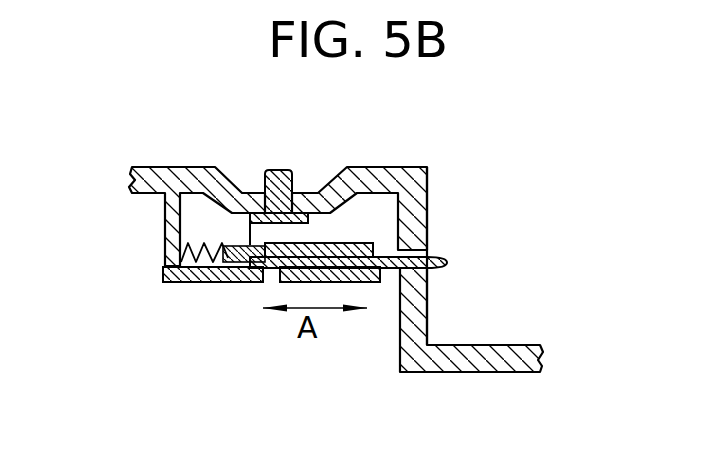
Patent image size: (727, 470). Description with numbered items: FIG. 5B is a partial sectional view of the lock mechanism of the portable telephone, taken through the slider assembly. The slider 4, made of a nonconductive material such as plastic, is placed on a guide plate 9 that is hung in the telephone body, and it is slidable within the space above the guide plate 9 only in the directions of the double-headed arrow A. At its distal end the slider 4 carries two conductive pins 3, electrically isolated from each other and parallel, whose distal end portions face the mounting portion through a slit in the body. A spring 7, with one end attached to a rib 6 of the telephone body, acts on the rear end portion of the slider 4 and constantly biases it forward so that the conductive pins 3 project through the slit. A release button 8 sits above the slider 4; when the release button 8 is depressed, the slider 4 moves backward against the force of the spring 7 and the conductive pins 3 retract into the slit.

The conductive pin 3 is at (442, 262).
The slider 4 is at (360, 244).
The rib 6 is at (165, 247).
The spring 7 is at (200, 241).
The release button 8 is at (282, 171).
The guide plate 9 is at (187, 280).